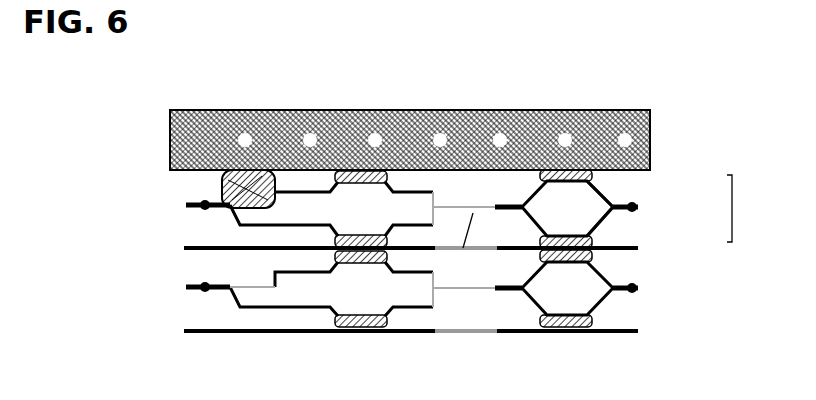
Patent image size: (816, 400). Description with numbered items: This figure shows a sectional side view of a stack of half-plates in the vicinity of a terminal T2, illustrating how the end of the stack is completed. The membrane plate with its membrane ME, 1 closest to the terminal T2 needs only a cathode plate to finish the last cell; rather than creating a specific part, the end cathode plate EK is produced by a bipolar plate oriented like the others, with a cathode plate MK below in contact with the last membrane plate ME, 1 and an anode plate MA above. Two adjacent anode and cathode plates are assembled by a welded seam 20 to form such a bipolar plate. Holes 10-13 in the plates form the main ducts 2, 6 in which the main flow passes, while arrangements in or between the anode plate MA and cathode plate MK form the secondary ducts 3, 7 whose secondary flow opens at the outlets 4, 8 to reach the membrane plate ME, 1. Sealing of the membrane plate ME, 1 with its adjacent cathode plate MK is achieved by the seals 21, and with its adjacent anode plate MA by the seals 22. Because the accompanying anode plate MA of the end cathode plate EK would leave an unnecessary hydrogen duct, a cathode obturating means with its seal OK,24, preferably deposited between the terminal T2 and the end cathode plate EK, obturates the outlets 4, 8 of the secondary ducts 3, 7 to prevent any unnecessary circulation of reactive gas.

The terminal T2 is at (372, 128).
The cathode obturating means with seal OK,24 is at (163, 174).
The seals 21 is at (317, 129).
The upper conductor tracks 3, 7 is at (381, 155).
The lower conductor tracks 2, 6 is at (418, 326).
The middle contact pads 4, 8 is at (254, 260).
The seals 22 is at (313, 342).
The metal layer / bus line ME, 1 is at (348, 229).
The welded seam 20 is at (156, 266).
The holes 10-13 is at (550, 248).
The anode plate MA is at (650, 189).
The cathode plate MK is at (650, 226).
The end cathode plate EK is at (756, 208).